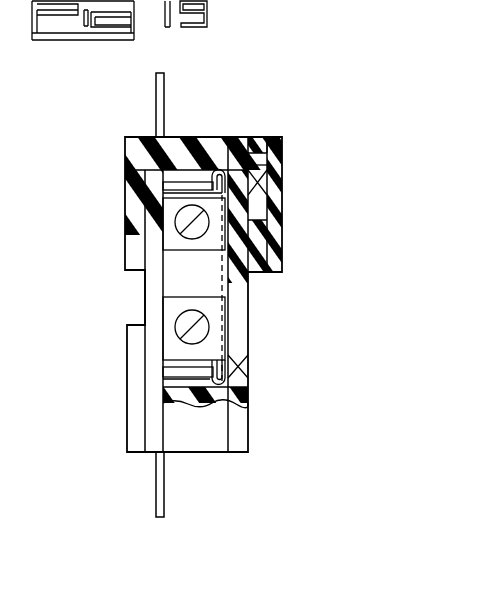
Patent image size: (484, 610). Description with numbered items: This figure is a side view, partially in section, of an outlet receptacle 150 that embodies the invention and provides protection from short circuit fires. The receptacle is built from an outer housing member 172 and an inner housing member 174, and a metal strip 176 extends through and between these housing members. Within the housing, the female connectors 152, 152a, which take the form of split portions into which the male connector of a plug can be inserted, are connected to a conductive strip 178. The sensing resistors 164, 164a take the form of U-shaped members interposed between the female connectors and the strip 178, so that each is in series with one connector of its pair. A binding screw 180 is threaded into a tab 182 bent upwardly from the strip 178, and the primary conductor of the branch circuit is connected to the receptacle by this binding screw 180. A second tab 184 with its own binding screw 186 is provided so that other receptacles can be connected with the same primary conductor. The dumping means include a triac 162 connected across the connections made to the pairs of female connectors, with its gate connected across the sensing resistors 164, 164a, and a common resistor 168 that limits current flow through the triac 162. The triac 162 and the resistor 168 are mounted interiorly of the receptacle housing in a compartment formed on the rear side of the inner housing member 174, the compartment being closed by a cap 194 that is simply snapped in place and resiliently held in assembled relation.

The outlet receptacle 150 is at (90, 158).
The female connector 152 is at (189, 182).
The female connector 152a is at (163, 375).
The triac 162 is at (262, 181).
The sensing resistor 164 is at (230, 190).
The sensing resistor 164a is at (230, 370).
The common resistor 168 is at (263, 234).
The outer housing member 172 is at (148, 455).
The inner housing member 174 is at (213, 455).
The metal strip 176 is at (165, 508).
The conductive strip 178 is at (227, 288).
The binding screw 180 is at (175, 232).
The tab 182 is at (178, 234).
The second tab 184 is at (172, 352).
The binding screw 186 is at (186, 311).
The cap 194 is at (273, 137).